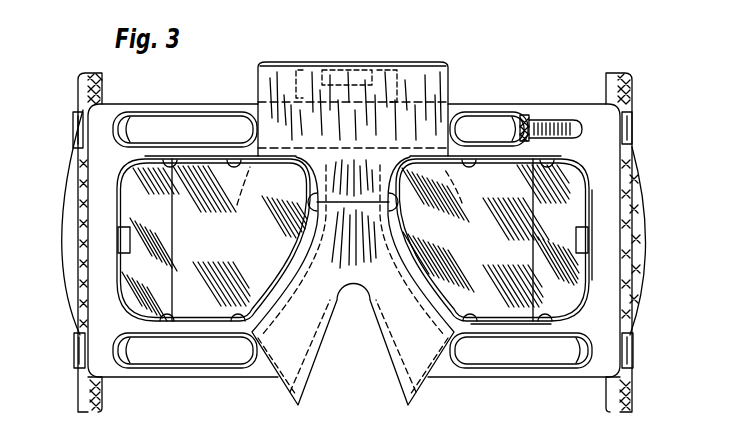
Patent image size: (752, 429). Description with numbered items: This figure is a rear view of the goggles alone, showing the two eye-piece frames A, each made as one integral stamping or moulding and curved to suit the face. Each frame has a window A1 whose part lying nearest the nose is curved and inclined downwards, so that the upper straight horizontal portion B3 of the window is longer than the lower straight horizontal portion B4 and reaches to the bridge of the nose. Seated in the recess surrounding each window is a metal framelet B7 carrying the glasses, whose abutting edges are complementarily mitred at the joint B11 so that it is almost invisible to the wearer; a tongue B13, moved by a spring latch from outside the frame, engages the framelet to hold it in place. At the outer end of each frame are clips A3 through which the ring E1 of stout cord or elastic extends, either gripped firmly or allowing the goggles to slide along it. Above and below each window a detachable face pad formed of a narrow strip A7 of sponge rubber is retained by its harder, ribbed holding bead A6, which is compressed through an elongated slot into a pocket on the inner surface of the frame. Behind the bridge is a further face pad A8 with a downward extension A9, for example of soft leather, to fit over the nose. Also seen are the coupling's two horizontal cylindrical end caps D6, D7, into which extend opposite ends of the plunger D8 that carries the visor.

The eye-piece frame A is at (557, 118).
The aperture or window A1 is at (117, 218).
The rings, eyes, loops or clips A3 is at (73, 130).
The resilient holding bead A6 is at (535, 123).
The strip of resilient material A7 is at (195, 120).
The face pad A8 is at (283, 84).
The downward extension A9 is at (390, 333).
The upper straight horizontal portion of the window B3 is at (488, 153).
The lower straight horizontal portion of the window B4 is at (515, 320).
The framelet B7 is at (357, 198).
The mitred joint B11 is at (175, 256).
The tongue B13 is at (583, 207).
The cylindrical end cap D6 is at (382, 72).
The cylindrical end cap D7 is at (305, 72).
The plunger D8 is at (343, 78).
The ring of cord or elastic E1 is at (85, 90).